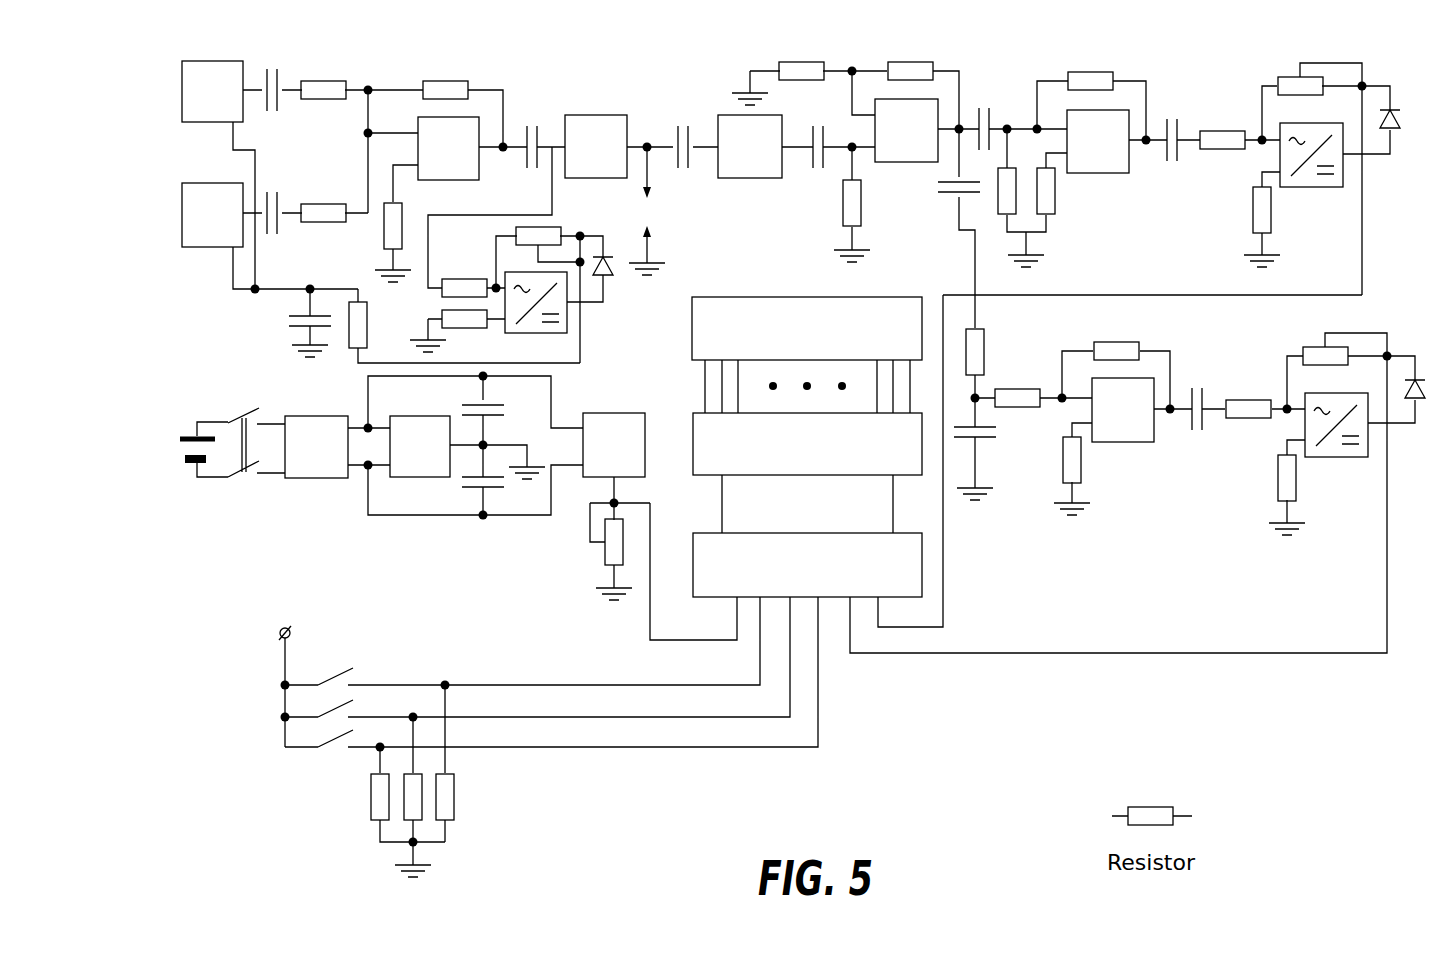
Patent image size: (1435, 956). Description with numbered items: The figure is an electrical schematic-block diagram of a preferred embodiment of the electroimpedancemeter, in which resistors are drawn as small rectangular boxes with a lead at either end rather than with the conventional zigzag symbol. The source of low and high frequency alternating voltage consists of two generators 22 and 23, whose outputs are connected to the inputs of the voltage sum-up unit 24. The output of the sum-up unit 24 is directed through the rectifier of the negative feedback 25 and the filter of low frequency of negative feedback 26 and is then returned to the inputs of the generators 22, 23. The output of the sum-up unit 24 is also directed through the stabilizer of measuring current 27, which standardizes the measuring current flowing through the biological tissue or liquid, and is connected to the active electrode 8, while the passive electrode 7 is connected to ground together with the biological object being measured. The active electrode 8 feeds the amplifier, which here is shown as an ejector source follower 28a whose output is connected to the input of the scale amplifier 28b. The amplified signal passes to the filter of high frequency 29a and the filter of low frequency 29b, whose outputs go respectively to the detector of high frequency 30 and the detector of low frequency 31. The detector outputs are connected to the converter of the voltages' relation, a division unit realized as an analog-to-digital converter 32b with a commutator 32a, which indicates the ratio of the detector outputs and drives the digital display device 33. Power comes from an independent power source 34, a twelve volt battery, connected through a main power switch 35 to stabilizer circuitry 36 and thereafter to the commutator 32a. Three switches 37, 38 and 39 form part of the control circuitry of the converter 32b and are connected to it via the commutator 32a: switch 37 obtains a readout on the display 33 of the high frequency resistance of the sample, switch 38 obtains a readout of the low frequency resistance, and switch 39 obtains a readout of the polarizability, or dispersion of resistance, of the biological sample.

The passive electrode 7 is at (652, 242).
The active electrode 8 is at (652, 170).
The generator of low frequency 22 is at (210, 122).
The generator of high frequency 23 is at (210, 247).
The voltage sum-up unit 24 is at (449, 180).
The rectifier of the negative feedback 25 is at (536, 333).
The filter of low frequency of negative feedback 26 is at (340, 280).
The stabilizer of measuring current 27 is at (580, 178).
The ejector source follower 28a is at (733, 178).
The scale amplifier 28b is at (885, 162).
The filter of high frequency 29a is at (998, 362).
The filter of low frequency 29b is at (999, 106).
The detector of high frequency 30 is at (1125, 442).
The detector of low frequency 31 is at (1100, 173).
The commutator 32a is at (820, 533).
The analog-to-digital converter 32b is at (693, 413).
The digital display device 33 is at (802, 297).
The independent power source 34 is at (172, 452).
The main power switch 35 is at (243, 407).
The stabilizer circuitry 36 is at (460, 517).
The switch for high frequency resistance readout 37 is at (335, 680).
The switch for low frequency resistance readout 38 is at (330, 711).
The switch for polarizability readout 39 is at (335, 748).